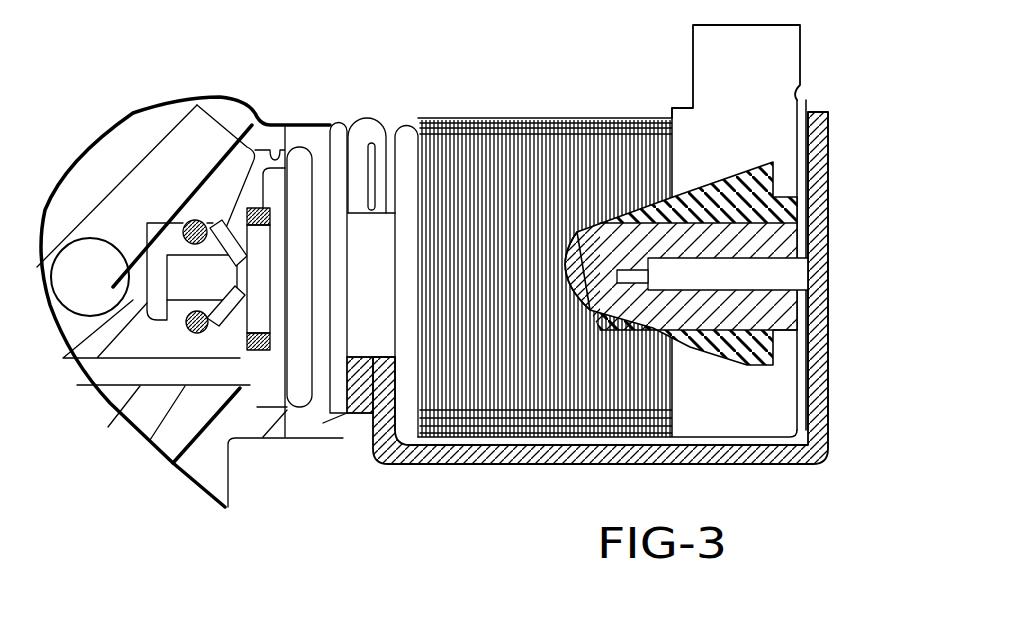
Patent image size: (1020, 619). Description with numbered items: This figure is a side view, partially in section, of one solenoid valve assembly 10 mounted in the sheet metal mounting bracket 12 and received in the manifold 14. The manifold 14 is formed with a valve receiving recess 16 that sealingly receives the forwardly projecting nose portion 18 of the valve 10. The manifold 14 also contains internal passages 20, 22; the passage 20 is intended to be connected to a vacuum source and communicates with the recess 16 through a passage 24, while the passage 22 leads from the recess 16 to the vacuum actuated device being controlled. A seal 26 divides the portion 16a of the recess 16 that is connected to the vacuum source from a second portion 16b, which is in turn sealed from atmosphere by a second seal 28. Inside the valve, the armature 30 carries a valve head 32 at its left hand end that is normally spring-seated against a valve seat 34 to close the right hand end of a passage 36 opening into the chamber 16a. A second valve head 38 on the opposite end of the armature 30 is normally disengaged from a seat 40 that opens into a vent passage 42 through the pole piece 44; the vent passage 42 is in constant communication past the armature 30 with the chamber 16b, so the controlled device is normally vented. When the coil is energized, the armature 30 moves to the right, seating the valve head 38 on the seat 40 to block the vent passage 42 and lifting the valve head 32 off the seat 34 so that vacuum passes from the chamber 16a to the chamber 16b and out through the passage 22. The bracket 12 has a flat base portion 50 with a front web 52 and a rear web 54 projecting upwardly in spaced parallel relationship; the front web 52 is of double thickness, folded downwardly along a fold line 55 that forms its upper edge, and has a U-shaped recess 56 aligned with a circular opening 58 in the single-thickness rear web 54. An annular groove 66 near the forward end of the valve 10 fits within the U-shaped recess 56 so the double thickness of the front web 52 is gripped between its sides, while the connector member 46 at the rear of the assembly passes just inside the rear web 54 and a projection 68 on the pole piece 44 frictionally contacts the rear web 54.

The solenoid valve assembly 10 is at (548, 70).
The sheet metal mounting bracket 12 is at (440, 470).
The manifold 14 is at (268, 38).
The valve receiving recess 16 is at (282, 125).
The first recess portion 16a is at (163, 330).
The second recess portion 16b is at (197, 105).
The nose portion 18 is at (150, 228).
The internal passage 20 is at (106, 290).
The passage 22 is at (110, 375).
The passage 24 is at (60, 338).
The seal 26 is at (183, 322).
The second seal 28 is at (295, 408).
The armature 30 is at (277, 268).
The valve head 32 is at (263, 305).
The valve seat 34 is at (222, 335).
The passage 36 is at (200, 294).
The second valve head 38 is at (580, 238).
The seat 40 is at (615, 226).
The vent passage 42 is at (800, 284).
The pole piece 44 is at (806, 203).
The connector member 46 is at (692, 35).
The base portion 50 is at (513, 463).
The front web 52 is at (392, 120).
The rear web 54 is at (826, 378).
The fold line 55 is at (350, 120).
The U-shaped recess 56 is at (370, 118).
The circular opening 58 is at (822, 235).
The annular groove 66 is at (370, 212).
The projection 68 is at (808, 256).